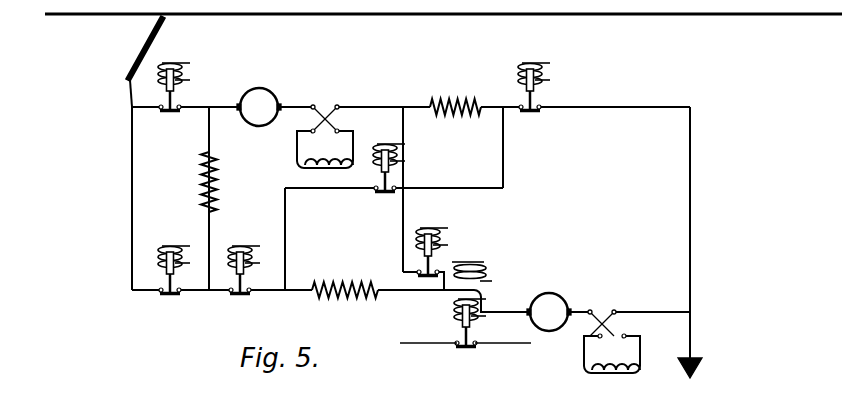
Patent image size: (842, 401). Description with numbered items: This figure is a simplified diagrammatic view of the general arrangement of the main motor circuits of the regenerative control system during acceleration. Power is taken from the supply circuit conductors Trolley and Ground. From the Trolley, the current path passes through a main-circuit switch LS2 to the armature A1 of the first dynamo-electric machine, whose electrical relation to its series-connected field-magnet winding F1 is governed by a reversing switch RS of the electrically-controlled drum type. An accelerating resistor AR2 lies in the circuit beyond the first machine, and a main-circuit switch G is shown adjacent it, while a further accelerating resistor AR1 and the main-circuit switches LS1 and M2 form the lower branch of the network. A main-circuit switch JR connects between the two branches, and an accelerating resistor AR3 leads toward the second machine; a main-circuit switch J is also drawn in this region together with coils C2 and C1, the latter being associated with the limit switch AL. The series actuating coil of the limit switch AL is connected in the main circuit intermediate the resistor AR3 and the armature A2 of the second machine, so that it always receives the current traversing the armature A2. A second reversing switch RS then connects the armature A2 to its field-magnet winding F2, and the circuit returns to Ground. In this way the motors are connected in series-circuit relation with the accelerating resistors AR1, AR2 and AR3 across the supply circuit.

The trolley Trolley is at (260, 13).
The main-circuit switch LS2 is at (170, 99).
The armature A1 is at (259, 107).
The reversing switch RS is at (465, 209).
The field-magnet winding F1 is at (325, 158).
The accelerating resistor AR2 is at (455, 98).
The main-circuit switch G is at (538, 103).
The main-circuit switch JR is at (382, 180).
The accelerating resistor AR1 is at (203, 181).
The main-circuit switch LS1 is at (171, 283).
The main-circuit switch M2 is at (244, 284).
The accelerating resistor AR3 is at (345, 281).
The main-circuit switch J is at (436, 247).
The coil C2 is at (482, 272).
The coil C1 is at (452, 302).
The limit switch AL is at (465, 333).
The armature A2 is at (549, 312).
The field-magnet winding F2 is at (612, 363).
The ground Ground is at (696, 377).